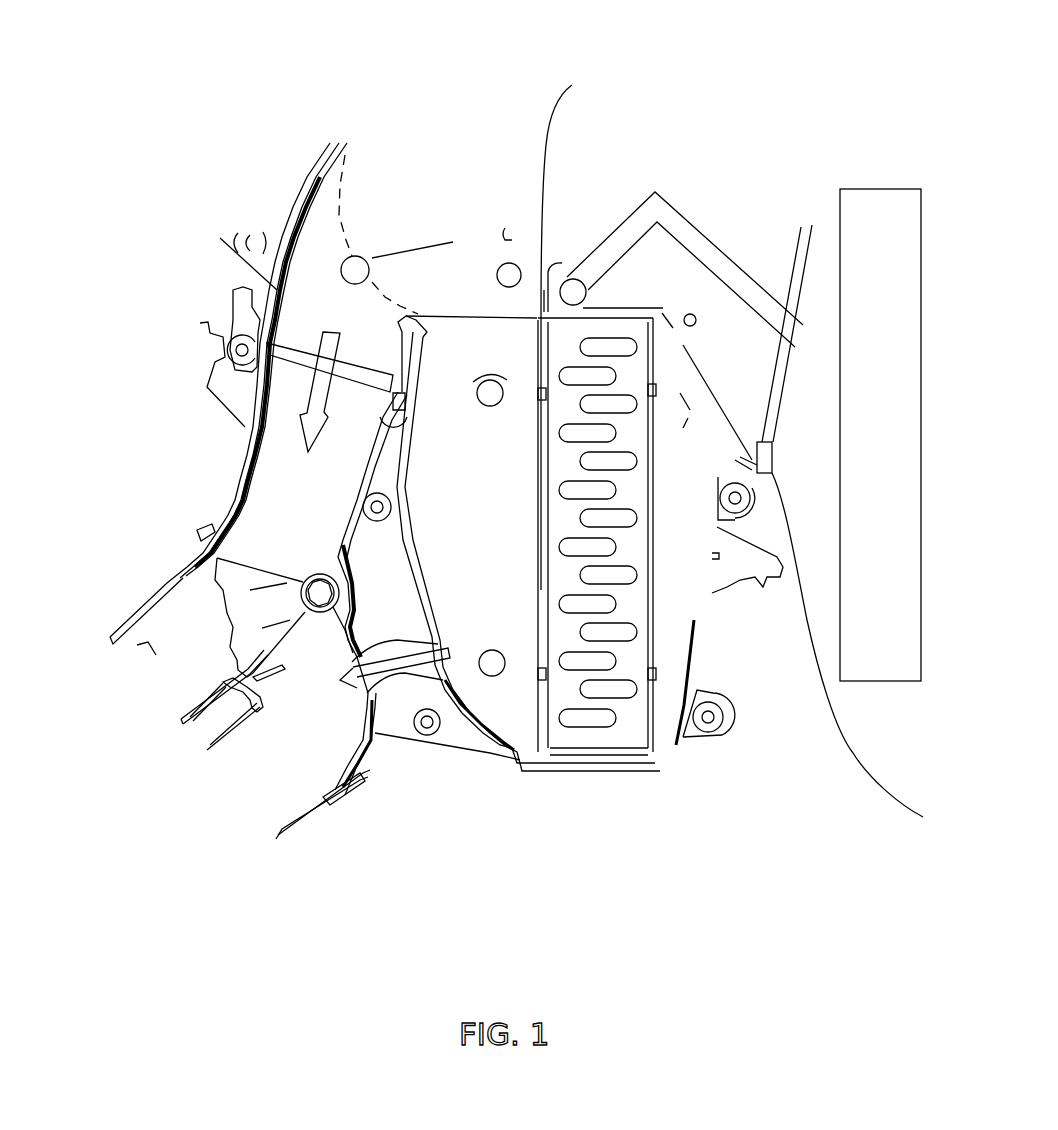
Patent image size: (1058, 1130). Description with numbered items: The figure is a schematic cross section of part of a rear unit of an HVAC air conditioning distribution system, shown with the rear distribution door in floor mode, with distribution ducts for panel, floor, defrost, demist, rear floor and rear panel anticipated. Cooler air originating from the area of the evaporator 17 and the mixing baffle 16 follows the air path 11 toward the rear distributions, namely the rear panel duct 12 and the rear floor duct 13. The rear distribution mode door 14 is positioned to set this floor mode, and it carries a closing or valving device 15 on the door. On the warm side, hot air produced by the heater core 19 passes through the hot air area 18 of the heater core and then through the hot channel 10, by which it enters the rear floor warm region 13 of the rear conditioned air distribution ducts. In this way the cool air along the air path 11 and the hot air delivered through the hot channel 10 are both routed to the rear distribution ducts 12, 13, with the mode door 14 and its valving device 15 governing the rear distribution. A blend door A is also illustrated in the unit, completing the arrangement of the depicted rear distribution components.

The hot channel 10 is at (392, 678).
The air path 11 is at (338, 355).
The rear panel distribution duct 12 is at (135, 635).
The rear floor distribution duct 13 is at (250, 775).
The rear distribution mode door 14 is at (247, 622).
The closing or valving device 15 is at (278, 678).
The mixing baffle 16 is at (387, 193).
The evaporator 17 is at (885, 673).
The hot air area 18 is at (473, 705).
The heater core 19 is at (627, 720).
The blend door A is at (713, 253).